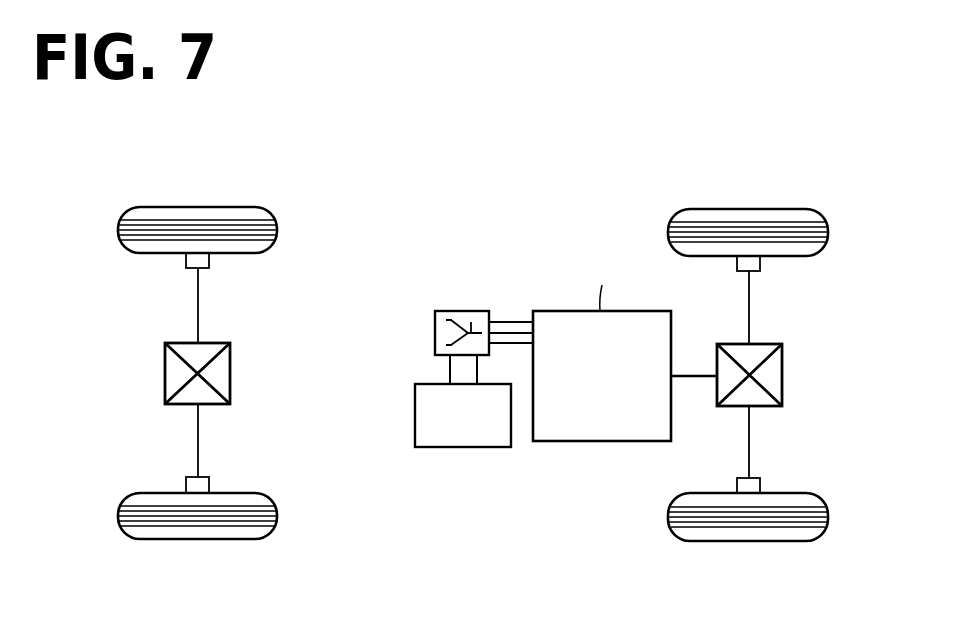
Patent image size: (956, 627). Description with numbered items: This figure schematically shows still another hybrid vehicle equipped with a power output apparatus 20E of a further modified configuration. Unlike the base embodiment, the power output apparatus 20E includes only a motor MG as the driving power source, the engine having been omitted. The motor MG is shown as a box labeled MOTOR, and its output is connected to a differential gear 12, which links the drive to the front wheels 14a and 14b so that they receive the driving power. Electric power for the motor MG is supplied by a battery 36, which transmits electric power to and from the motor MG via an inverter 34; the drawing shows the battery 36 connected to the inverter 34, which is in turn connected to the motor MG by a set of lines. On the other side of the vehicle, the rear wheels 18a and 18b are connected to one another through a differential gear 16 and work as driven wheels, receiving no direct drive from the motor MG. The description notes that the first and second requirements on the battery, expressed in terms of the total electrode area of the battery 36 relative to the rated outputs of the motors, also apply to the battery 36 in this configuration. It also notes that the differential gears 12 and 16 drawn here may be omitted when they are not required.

The differential gear 12 is at (782, 370).
The front wheel 14a is at (750, 207).
The front wheel 14b is at (749, 542).
The differential gear 16 is at (165, 365).
The rear wheel 18a is at (199, 206).
The rear wheel 18b is at (197, 540).
The power output apparatus 20E is at (535, 295).
The inverter 34 is at (462, 311).
The battery 36 is at (415, 410).